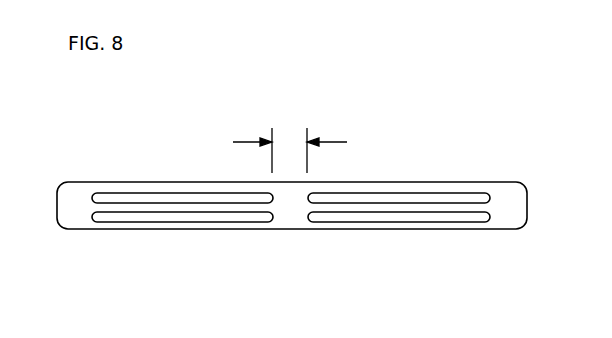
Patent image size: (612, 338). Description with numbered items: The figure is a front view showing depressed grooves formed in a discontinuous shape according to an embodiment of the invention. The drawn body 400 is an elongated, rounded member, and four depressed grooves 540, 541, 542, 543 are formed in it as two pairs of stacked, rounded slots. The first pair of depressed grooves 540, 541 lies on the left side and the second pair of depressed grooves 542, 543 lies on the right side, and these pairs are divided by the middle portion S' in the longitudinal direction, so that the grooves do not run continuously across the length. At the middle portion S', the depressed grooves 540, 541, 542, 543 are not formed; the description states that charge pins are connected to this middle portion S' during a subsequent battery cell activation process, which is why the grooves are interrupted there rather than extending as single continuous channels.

The display panel 400 is at (82, 182).
The depressed groove 540 is at (145, 193).
The depressed groove 541 is at (147, 222).
The depressed groove 542 is at (407, 193).
The depressed groove 543 is at (407, 222).
The middle portion S' is at (290, 141).